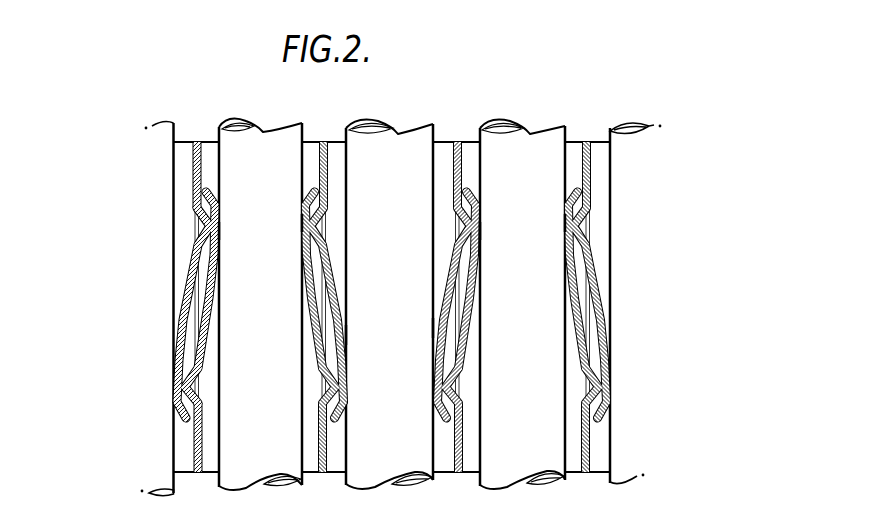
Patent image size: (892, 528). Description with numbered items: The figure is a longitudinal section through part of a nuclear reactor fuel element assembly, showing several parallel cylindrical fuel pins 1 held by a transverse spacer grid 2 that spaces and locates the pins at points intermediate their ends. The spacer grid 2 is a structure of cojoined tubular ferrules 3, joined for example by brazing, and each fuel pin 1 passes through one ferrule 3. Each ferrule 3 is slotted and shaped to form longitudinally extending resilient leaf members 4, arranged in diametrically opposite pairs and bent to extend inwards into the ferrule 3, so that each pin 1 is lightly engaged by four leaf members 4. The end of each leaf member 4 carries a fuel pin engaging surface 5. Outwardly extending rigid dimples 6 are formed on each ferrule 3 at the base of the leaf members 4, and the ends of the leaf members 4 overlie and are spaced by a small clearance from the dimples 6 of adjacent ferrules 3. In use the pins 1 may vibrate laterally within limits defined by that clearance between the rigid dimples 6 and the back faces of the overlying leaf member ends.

The fuel pin 1 is at (276, 138).
The spacer grid 2 is at (597, 158).
The ferrule 3 is at (332, 147).
The leaf member 4 is at (313, 316).
The fuel pin engaging surface 5 is at (306, 224).
The rigid dimple 6 is at (208, 224).